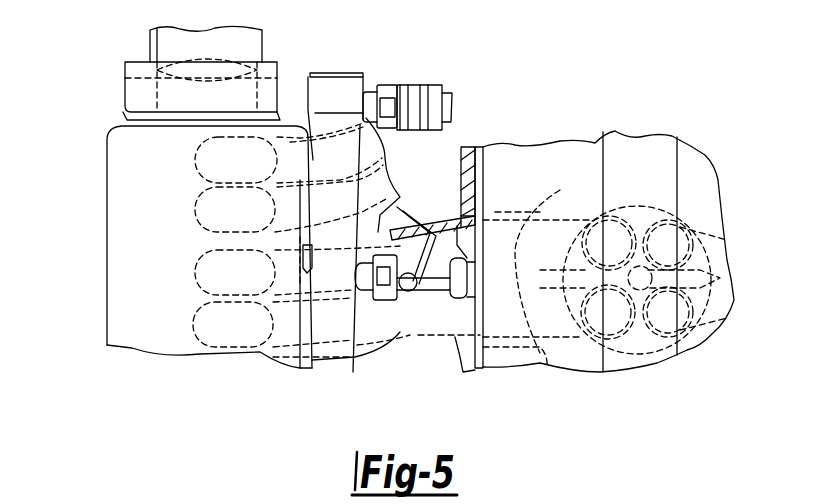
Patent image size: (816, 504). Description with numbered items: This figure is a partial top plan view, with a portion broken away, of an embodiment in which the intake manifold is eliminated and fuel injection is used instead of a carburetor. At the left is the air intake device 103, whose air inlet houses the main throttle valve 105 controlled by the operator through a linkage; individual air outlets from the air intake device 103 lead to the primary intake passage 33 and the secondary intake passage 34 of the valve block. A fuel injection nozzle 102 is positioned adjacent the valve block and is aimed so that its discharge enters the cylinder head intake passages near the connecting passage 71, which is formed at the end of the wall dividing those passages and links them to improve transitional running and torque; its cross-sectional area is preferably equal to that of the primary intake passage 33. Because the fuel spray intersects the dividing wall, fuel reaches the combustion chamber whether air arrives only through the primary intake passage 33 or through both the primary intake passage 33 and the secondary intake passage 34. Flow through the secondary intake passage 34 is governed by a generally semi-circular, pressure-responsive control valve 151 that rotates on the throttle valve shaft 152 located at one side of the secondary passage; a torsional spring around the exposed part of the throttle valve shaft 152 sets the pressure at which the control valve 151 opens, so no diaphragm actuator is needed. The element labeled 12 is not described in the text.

The air intake device 103 is at (122, 263).
The main throttle valve 105 is at (237, 60).
The fuel injection nozzle 102 is at (441, 85).
The secondary intake passage 34 is at (410, 243).
The control valve 151 is at (447, 218).
The throttle valve shaft 152 is at (418, 300).
The primary intake passage 33 is at (398, 342).
The connecting passage 71 is at (503, 190).
The passage 12 is at (538, 277).